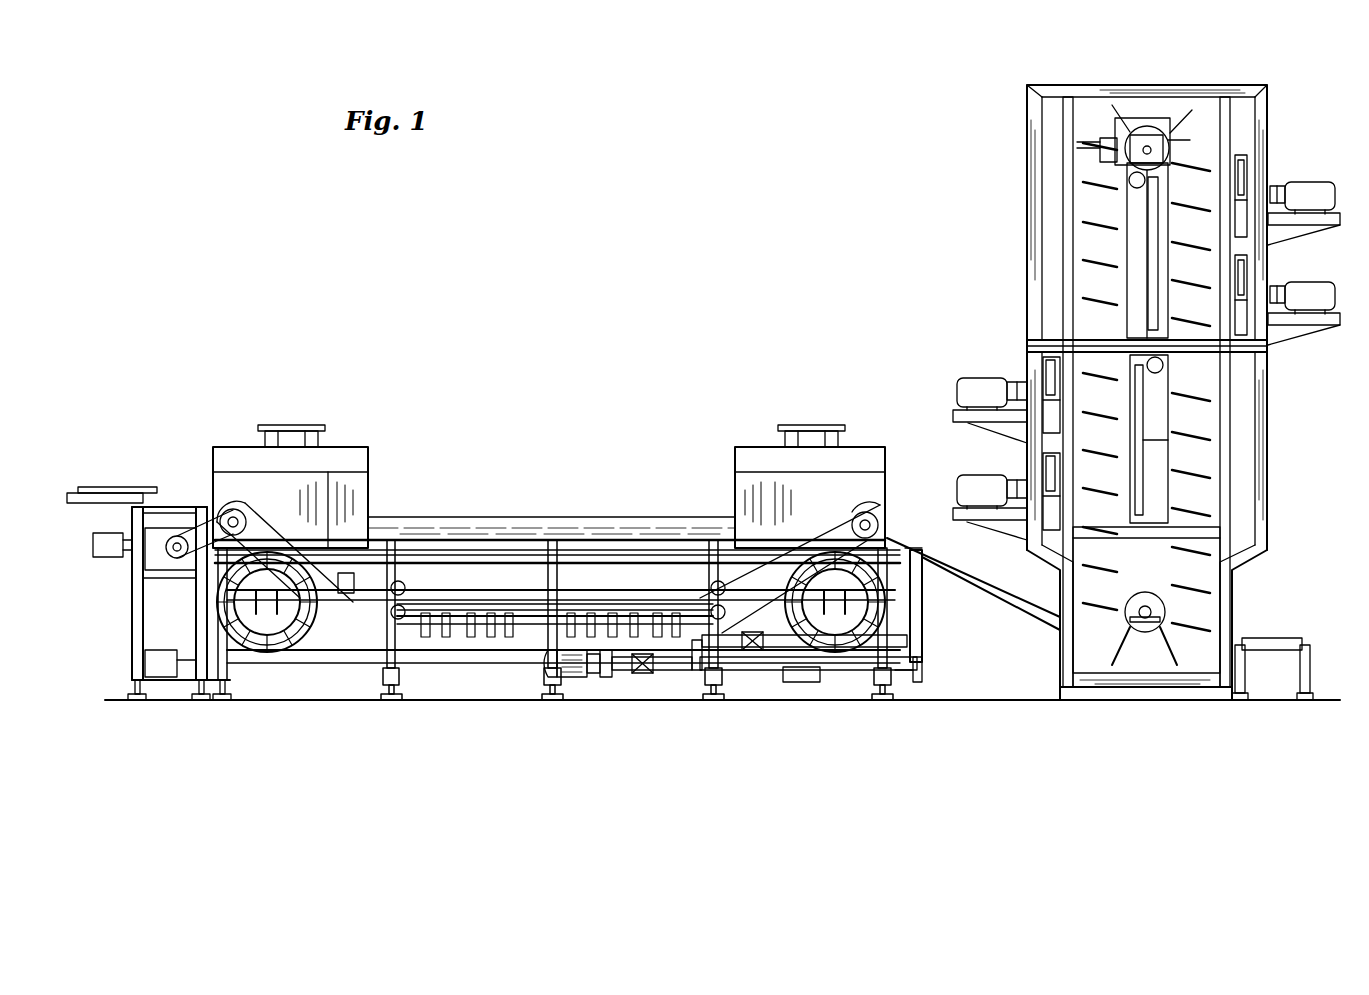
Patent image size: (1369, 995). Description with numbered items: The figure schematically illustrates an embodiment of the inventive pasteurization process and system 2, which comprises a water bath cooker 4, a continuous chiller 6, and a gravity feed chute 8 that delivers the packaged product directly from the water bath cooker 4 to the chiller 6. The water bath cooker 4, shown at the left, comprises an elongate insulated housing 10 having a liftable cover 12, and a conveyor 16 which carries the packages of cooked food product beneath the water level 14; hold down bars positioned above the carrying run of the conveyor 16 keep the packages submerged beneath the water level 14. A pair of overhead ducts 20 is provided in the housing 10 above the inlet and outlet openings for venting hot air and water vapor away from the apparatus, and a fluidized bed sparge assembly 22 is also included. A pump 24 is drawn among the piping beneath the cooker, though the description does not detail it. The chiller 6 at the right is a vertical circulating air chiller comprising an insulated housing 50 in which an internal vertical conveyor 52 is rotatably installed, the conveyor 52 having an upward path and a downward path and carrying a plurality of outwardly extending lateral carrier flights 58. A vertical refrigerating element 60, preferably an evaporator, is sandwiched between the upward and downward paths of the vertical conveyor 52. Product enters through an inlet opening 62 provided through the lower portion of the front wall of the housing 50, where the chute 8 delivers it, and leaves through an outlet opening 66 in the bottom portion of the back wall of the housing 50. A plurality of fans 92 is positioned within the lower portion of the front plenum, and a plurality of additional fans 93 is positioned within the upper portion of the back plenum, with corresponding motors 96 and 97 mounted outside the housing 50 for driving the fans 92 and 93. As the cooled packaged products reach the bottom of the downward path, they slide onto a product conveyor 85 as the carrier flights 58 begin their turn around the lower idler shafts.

The pasteurization process and system 2 is at (434, 346).
The water bath cooker 4 is at (588, 525).
The continuous chiller 6 is at (1038, 128).
The gravity feed chute 8 is at (975, 590).
The elongate insulated housing 10 is at (422, 520).
The liftable cover 12 is at (516, 525).
The water level 14 is at (628, 530).
The conveyor 16 is at (447, 598).
The overhead ducts 20 is at (281, 425).
The fluidized bed sparge assembly 22 is at (615, 675).
The pump 24 is at (574, 672).
The insulated housing 50 is at (1026, 230).
The internal vertical conveyor 52 is at (1127, 245).
The lateral carrier flights 58 is at (1095, 223).
The vertical refrigerating element 60 is at (1138, 318).
The inlet opening 62 is at (1058, 612).
The outlet opening 66 is at (1228, 600).
The product conveyor 85 is at (1300, 638).
The fans 92 is at (1243, 168).
The additional fans 93 is at (1048, 377).
The motor 96 is at (1305, 184).
The motor 97 is at (958, 393).